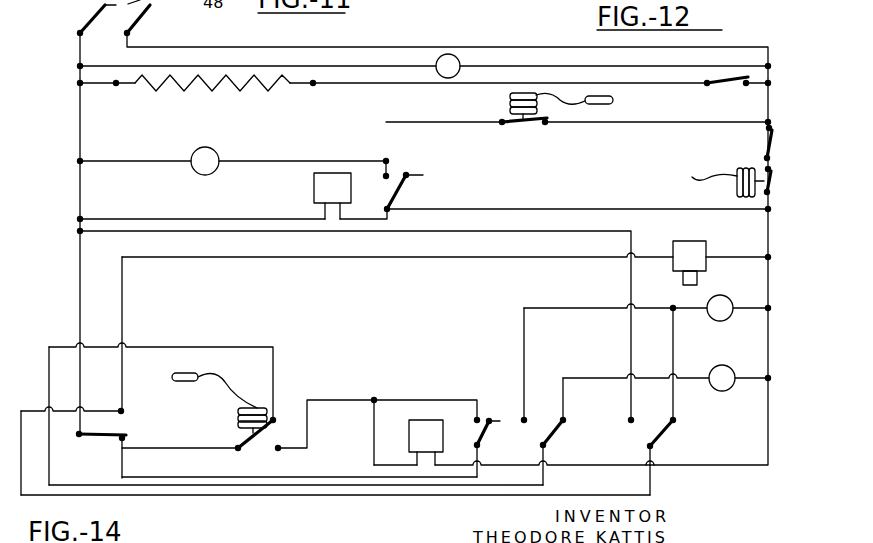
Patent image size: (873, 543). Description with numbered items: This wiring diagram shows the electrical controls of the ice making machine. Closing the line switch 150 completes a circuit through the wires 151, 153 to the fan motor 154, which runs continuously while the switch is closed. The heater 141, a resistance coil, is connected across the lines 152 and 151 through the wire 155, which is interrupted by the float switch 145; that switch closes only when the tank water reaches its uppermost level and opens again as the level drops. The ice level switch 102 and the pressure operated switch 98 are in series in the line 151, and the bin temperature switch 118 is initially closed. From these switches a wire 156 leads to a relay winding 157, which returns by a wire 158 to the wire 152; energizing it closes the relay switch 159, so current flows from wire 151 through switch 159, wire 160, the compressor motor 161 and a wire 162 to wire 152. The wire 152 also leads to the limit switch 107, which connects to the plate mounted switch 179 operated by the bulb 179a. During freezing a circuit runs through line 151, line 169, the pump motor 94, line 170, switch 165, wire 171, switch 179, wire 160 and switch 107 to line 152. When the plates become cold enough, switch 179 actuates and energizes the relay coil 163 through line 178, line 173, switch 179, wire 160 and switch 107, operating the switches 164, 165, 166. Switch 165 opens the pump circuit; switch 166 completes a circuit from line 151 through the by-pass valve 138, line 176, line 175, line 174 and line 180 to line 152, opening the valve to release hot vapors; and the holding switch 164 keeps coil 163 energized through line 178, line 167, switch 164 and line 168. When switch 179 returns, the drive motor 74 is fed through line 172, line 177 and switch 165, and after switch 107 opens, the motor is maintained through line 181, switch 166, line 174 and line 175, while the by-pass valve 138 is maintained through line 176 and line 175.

The line switch 150 is at (88, 19).
The wire 152 is at (78, 52).
The wire 151 is at (368, 37).
The wire 153 is at (313, 62).
The fan motor 154 is at (462, 60).
The wire 155 is at (106, 86).
The heater 141 is at (229, 88).
The float switch 145 is at (729, 86).
The ice level switch 102 is at (763, 147).
The bin temperature switch 118 is at (528, 128).
The pressure operated switch 98 is at (773, 180).
The wire 162 is at (159, 163).
The compressor motor 161 is at (214, 152).
The wire 160 is at (302, 160).
The relay winding 157 is at (318, 182).
The relay switch 159 is at (395, 192).
The wire 158 is at (205, 218).
The wire 156 is at (578, 208).
The line 180 is at (440, 232).
The line 176 is at (352, 259).
The by-pass valve 138 is at (690, 245).
The line 177 is at (523, 365).
The drive motor 74 is at (718, 322).
The line 172 is at (750, 300).
The line 181 is at (672, 345).
The line 170 is at (600, 368).
The pump motor 94 is at (722, 392).
The line 169 is at (755, 375).
The wire 171 is at (228, 350).
The bulb 179a is at (180, 374).
The line 175 is at (118, 410).
The limit switch 107 is at (104, 439).
The plate mounted switch 179 is at (256, 449).
The line 173 is at (332, 400).
The line 167 is at (447, 395).
The relay coil 163 is at (410, 432).
The line 178 is at (372, 452).
The holding switch 164 is at (484, 430).
The line 168 is at (300, 478).
The second relay switch 165 is at (553, 433).
The switch 166 is at (660, 433).
The line 174 is at (333, 495).